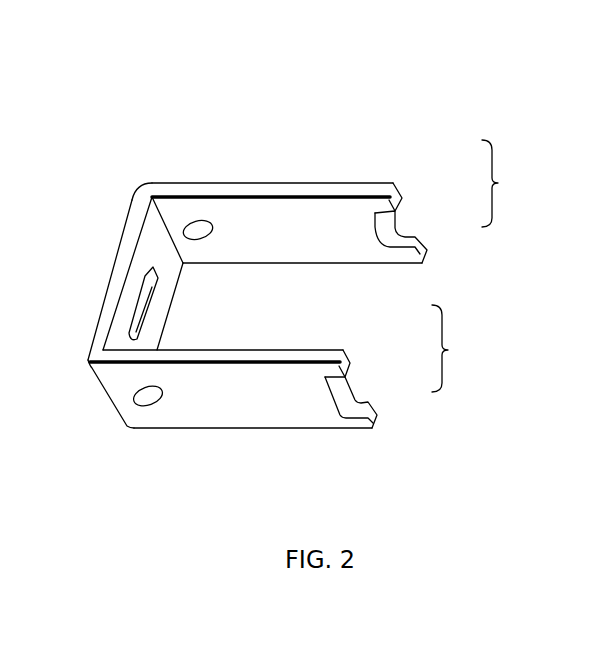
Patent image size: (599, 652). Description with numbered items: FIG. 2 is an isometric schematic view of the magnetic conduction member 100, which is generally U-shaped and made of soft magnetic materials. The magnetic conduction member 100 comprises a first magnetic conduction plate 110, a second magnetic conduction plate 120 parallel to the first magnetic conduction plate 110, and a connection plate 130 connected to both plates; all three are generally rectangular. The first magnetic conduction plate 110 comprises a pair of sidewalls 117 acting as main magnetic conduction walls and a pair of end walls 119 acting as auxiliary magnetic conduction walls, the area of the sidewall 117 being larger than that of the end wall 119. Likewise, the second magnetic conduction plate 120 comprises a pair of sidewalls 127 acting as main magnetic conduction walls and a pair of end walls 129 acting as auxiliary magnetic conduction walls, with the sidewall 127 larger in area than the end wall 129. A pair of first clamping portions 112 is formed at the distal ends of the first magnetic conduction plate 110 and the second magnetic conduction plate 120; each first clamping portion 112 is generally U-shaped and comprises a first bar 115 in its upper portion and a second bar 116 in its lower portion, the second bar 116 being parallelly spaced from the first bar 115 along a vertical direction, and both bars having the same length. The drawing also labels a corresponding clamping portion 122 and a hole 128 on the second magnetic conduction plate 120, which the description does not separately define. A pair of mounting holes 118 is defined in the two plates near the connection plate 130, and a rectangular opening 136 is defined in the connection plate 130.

The magnetic conduction member 100 is at (306, 61).
The first magnetic conduction plate 110 is at (295, 183).
The first clamping portion 112 is at (510, 183).
The first bar 115 is at (383, 183).
The second bar 116 is at (407, 236).
The sidewall 117 is at (272, 233).
The mounting hole 118 is at (197, 225).
The end wall 119 is at (177, 192).
The second magnetic conduction plate 120 is at (286, 398).
The lower engaging portion 122 is at (459, 348).
The sidewall 127 is at (190, 403).
The lower plate hole 128 is at (135, 395).
The end wall 129 is at (182, 352).
The connection plate 130 is at (133, 237).
The rectangular opening 136 is at (155, 284).